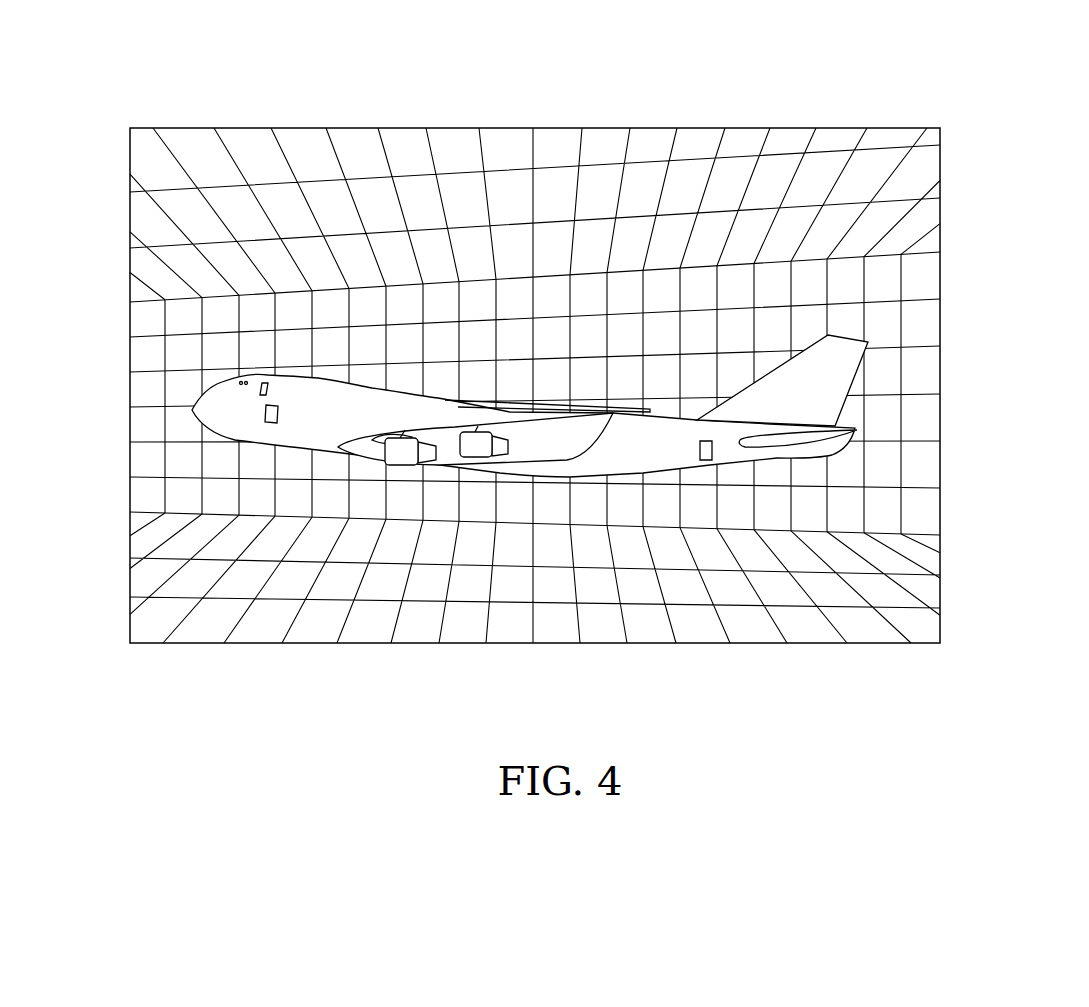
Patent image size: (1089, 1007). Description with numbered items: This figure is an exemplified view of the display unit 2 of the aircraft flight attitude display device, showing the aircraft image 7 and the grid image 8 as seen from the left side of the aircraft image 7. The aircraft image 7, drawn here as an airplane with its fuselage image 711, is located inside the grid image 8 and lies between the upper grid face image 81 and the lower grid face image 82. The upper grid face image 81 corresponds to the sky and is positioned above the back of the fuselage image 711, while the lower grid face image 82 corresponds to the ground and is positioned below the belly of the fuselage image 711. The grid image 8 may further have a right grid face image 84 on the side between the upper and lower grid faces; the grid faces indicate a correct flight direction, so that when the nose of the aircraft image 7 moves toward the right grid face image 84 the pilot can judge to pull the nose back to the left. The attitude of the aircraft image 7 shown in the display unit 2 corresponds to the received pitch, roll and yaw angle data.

The display unit 2 is at (390, 127).
The aircraft image 7 is at (443, 380).
The fuselage image 711 is at (305, 405).
The grid image 8 is at (958, 491).
The upper grid face image 81 is at (468, 203).
The lower grid face image 82 is at (428, 588).
The right grid face image 84 is at (892, 375).